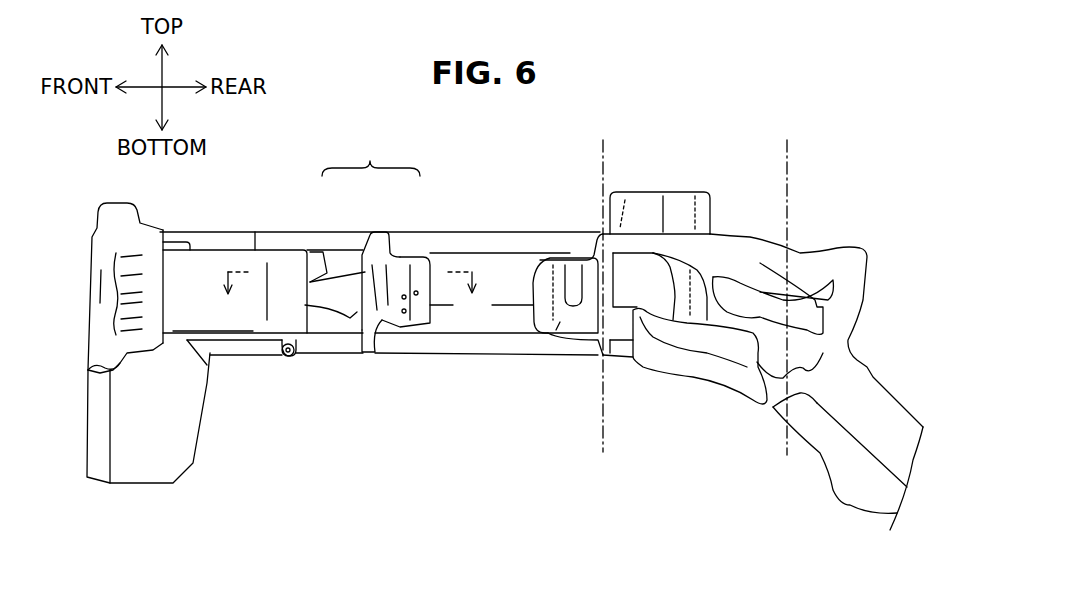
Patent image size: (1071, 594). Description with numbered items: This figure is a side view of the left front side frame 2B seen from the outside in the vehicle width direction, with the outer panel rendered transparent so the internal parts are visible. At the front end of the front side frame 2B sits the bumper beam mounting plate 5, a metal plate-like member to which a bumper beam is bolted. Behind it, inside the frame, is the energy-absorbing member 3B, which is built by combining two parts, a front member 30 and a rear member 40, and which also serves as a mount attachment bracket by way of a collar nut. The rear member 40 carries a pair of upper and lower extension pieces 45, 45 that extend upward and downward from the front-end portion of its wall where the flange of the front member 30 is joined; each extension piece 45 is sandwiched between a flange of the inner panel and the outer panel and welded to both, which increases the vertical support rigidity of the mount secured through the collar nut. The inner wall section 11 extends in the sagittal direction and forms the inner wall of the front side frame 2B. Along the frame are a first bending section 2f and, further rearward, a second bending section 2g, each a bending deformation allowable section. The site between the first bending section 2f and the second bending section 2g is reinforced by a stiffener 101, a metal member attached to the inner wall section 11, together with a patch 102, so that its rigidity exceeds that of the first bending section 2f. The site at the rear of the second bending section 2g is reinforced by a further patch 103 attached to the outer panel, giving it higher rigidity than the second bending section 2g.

The bumper beam mounting plate 5 is at (117, 222).
The front side frame 2B is at (274, 170).
The energy-absorbing member 3B is at (371, 155).
The front member 30 is at (342, 262).
The rear member 40 is at (398, 262).
The extension piece 45 is at (372, 240).
The inner wall section 11 is at (507, 288).
The first bending section 2f is at (603, 280).
The second bending section 2g is at (787, 282).
The stiffener 101 is at (648, 193).
The patch 102 is at (697, 370).
The patch 103 is at (857, 487).